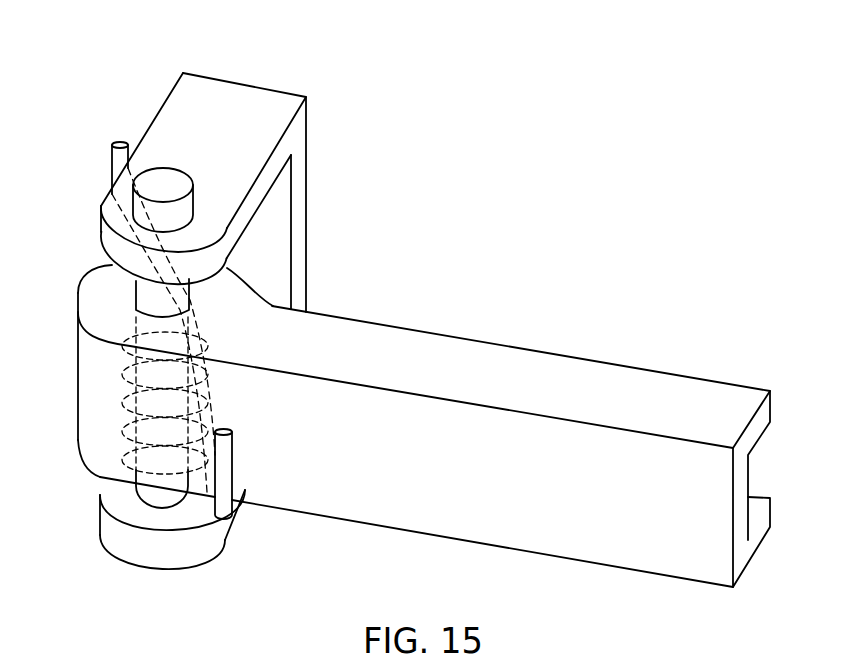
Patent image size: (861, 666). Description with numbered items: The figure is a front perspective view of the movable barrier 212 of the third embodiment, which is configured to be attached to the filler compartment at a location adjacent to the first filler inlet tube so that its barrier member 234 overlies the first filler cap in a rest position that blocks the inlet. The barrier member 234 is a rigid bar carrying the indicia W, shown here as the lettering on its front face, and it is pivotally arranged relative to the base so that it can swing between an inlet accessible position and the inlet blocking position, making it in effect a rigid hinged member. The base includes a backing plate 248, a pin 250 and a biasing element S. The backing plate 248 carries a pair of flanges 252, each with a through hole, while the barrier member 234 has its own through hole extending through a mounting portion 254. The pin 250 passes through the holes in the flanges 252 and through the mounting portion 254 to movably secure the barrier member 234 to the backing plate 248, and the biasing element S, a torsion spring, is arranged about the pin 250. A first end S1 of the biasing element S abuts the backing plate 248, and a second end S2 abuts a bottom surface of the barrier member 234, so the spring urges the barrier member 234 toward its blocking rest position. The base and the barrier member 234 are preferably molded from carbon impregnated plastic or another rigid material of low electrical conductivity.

The movable barrier 212 is at (305, 58).
The backing plate 248 is at (307, 175).
The pin 250 is at (168, 168).
The flanges 252 is at (100, 212).
The mounting portion 254 is at (80, 326).
The barrier member 234 is at (575, 357).
The first end of the biasing element S1 is at (112, 163).
The second end of the biasing element S2 is at (236, 435).
The biasing element S is at (234, 475).
The indicia W is at (506, 514).